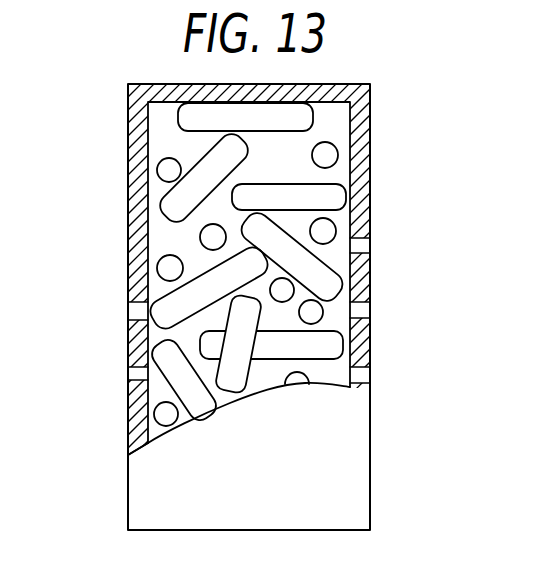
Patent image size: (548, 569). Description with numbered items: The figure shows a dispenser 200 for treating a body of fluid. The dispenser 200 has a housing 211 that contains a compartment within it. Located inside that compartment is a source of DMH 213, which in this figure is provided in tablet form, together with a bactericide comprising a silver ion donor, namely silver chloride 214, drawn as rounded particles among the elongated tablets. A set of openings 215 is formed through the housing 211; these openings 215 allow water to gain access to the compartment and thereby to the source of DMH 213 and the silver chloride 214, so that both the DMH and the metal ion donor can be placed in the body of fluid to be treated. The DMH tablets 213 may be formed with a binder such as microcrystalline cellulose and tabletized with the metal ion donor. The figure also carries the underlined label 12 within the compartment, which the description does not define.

The dispenser 200 is at (371, 78).
The housing 211 is at (363, 128).
The source of DMH 213 is at (333, 340).
The silver chloride 214 is at (200, 235).
The openings 215 is at (134, 313).
The filter medium 12 is at (288, 174).